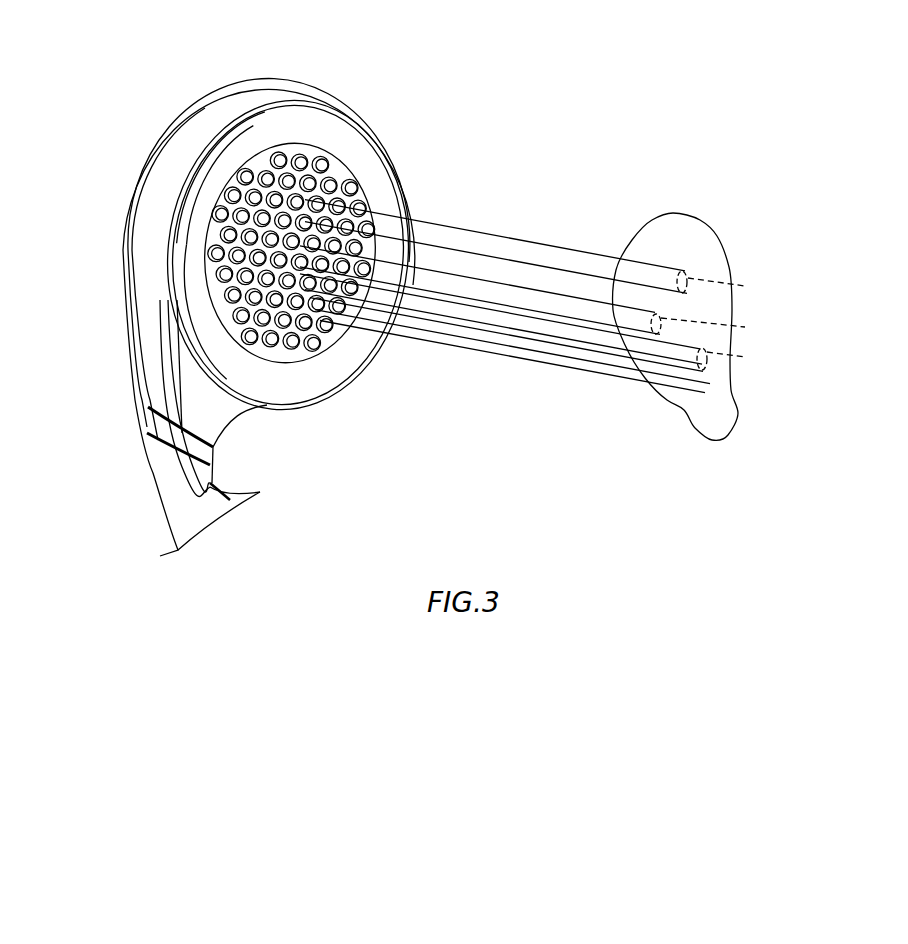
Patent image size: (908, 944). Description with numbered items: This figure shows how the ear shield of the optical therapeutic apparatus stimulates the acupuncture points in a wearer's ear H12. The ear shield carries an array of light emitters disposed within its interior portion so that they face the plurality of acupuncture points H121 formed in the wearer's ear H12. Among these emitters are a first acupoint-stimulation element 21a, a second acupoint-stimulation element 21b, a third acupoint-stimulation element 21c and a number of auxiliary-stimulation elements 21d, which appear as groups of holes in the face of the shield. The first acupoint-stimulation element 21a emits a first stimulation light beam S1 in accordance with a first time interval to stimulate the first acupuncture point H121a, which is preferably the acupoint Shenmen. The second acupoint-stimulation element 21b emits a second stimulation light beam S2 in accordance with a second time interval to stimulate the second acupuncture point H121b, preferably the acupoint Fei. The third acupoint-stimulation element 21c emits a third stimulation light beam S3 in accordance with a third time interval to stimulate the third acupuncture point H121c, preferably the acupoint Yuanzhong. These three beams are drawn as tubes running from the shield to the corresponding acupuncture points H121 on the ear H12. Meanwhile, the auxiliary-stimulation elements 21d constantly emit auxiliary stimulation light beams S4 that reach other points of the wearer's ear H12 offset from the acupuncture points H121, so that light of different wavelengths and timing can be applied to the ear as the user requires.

The first acupoint-stimulation element 21a is at (307, 190).
The second acupoint-stimulation element 21b is at (300, 242).
The third acupoint-stimulation element 21c is at (290, 268).
The auxiliary-stimulation element 21d is at (312, 315).
The first stimulation light beam S1 is at (530, 251).
The second stimulation light beam S2 is at (562, 303).
The third stimulation light beam S3 is at (505, 323).
The auxiliary stimulation light beam S4 is at (553, 357).
The wearer's ear H12 is at (674, 214).
The acupuncture points H121 is at (769, 320).
The first acupuncture point H121a is at (750, 286).
The second acupuncture point H121b is at (750, 327).
The third acupuncture point H121c is at (750, 357).